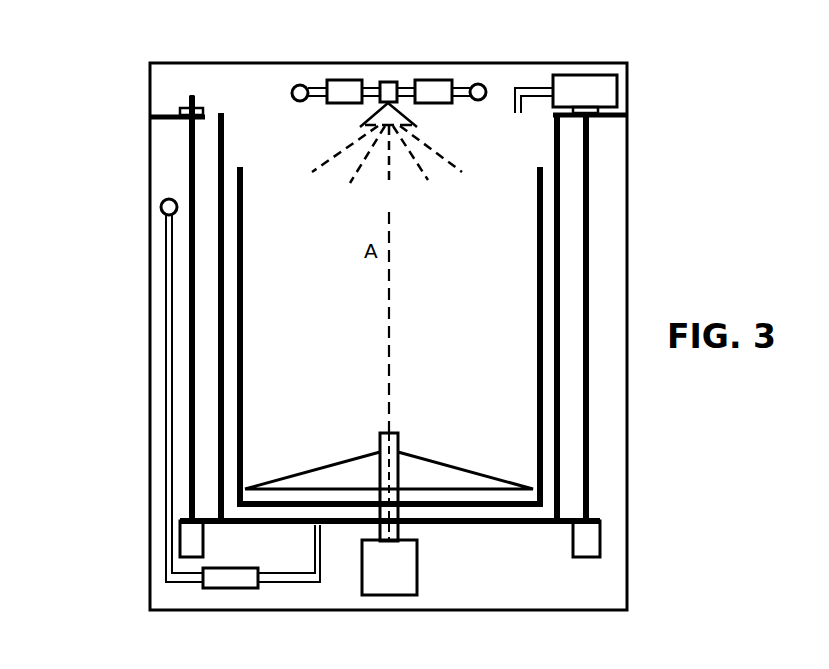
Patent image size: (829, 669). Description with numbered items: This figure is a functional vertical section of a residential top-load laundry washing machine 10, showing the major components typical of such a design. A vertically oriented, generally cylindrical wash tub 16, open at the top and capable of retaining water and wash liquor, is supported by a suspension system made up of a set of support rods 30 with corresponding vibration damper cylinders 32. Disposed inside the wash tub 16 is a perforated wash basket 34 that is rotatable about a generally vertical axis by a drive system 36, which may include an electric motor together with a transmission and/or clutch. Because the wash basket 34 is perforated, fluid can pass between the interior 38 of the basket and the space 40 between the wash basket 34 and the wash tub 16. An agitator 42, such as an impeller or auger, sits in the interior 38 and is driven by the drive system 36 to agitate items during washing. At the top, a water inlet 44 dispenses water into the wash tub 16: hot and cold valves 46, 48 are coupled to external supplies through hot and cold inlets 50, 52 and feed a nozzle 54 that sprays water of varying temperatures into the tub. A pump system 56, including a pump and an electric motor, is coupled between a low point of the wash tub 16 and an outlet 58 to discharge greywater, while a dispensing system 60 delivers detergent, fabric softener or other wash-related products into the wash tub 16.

The laundry washing machine 10 is at (81, 123).
The wash tub 16 is at (225, 158).
The support rods 30 is at (190, 370).
The vibration damper cylinders 32 is at (180, 535).
The wash basket 34 is at (537, 210).
The drive system 36 is at (418, 582).
The interior 38 is at (338, 330).
The space 40 is at (545, 303).
The agitator 42 is at (353, 460).
The water inlet 44 is at (250, 83).
The hot valve 46 is at (351, 80).
The cold valve 48 is at (440, 80).
The hot inlet 50 is at (299, 85).
The cold inlet 52 is at (481, 84).
The nozzle 54 is at (373, 124).
The pump system 56 is at (230, 590).
The outlet 58 is at (161, 209).
The dispensing system 60 is at (593, 75).